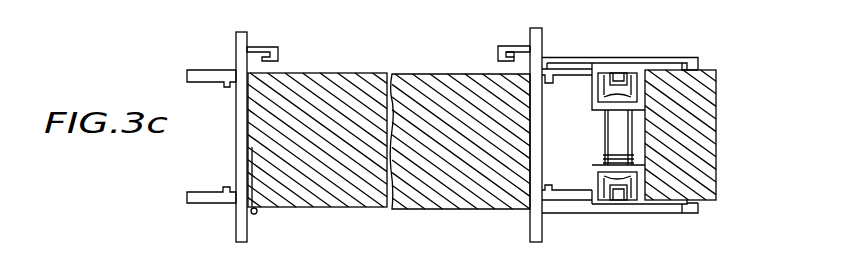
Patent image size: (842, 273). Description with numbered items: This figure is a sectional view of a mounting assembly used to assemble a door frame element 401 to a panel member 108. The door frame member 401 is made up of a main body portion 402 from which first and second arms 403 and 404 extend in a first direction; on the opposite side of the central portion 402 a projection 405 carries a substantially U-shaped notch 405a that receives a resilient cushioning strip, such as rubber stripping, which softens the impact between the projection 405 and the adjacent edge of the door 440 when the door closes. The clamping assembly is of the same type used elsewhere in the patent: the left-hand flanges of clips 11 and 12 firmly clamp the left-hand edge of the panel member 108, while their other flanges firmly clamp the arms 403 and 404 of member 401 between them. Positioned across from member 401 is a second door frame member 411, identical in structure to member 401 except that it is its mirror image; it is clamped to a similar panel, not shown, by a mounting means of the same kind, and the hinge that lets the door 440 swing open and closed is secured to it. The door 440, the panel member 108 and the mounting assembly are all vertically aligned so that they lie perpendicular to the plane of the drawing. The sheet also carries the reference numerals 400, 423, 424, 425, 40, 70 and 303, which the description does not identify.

The door frame member 411 is at (217, 51).
The upper mounting flange 423 is at (199, 68).
The lower mounting flange 424 is at (197, 205).
The hook clip 425 is at (251, 51).
The door 440 is at (340, 79).
The wall panel assembly 400 is at (406, 52).
The projection 405 is at (497, 53).
The U-shaped notch 405a is at (510, 58).
The door frame element 401 is at (527, 213).
The main body portion 402 is at (536, 115).
The first arm 403 is at (579, 72).
The second arm 404 is at (570, 189).
The clip 11 is at (672, 53).
The clip 12 is at (660, 215).
The spacer block 40 is at (691, 59).
The gasket 70 is at (606, 73).
The glazing pane 303 is at (612, 139).
The panel member 108 is at (712, 136).